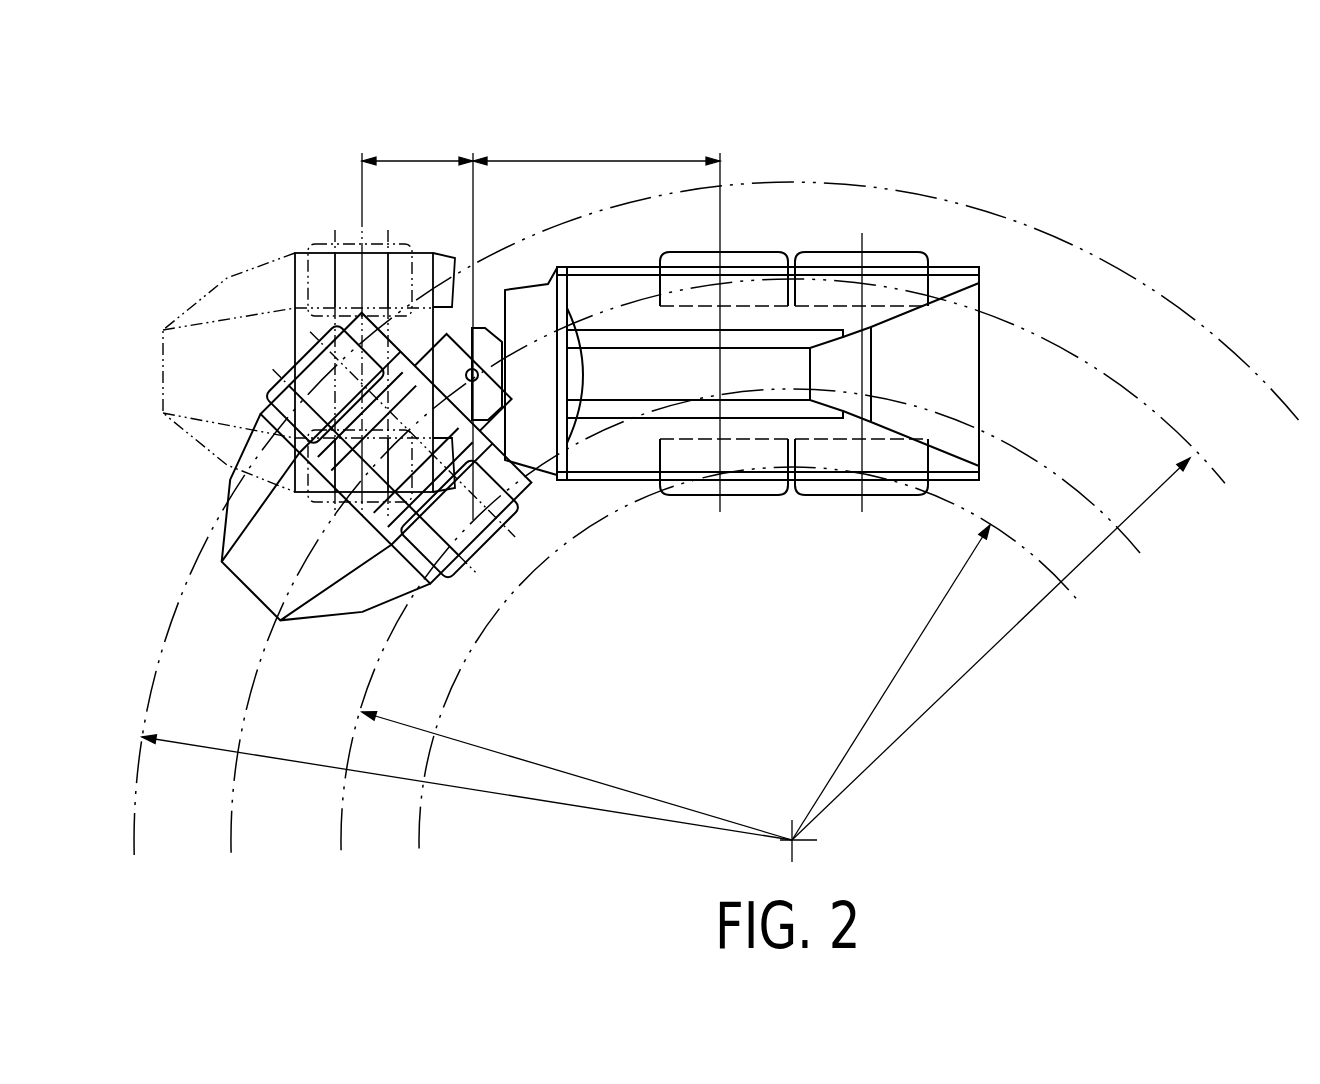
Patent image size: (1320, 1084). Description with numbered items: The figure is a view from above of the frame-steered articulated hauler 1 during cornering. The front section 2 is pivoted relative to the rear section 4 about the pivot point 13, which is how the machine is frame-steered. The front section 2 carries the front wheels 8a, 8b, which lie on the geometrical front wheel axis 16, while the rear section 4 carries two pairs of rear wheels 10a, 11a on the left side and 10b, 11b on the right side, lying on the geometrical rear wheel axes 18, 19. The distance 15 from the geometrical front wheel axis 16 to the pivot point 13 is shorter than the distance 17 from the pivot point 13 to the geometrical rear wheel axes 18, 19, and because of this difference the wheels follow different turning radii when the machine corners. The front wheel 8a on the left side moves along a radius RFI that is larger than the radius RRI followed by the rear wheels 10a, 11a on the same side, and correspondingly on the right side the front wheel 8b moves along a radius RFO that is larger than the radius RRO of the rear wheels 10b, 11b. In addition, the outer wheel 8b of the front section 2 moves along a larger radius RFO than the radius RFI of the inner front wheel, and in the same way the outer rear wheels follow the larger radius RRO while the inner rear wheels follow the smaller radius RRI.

The frame-steered articulated hauler 1 is at (873, 102).
The front section 2 is at (268, 537).
The rear section 4 is at (965, 267).
The front wheel 8a is at (478, 556).
The front wheel 8b is at (280, 380).
The rear wheel 10a is at (697, 488).
The rear wheel 10b is at (752, 258).
The rear wheel 11a is at (823, 488).
The rear wheel 11b is at (903, 258).
The pivot point 13 is at (481, 379).
The distance 15 is at (420, 158).
The geometrical front wheel axis 16 is at (290, 344).
The distance 17 is at (587, 158).
The geometrical rear wheel axis 18 is at (718, 500).
The geometrical rear wheel axis 19 is at (862, 503).
The front outer turning radius RFO is at (525, 800).
The front inner turning radius RFI is at (580, 773).
The rear outer turning radius RRO is at (957, 683).
The rear inner turning radius RRI is at (860, 730).